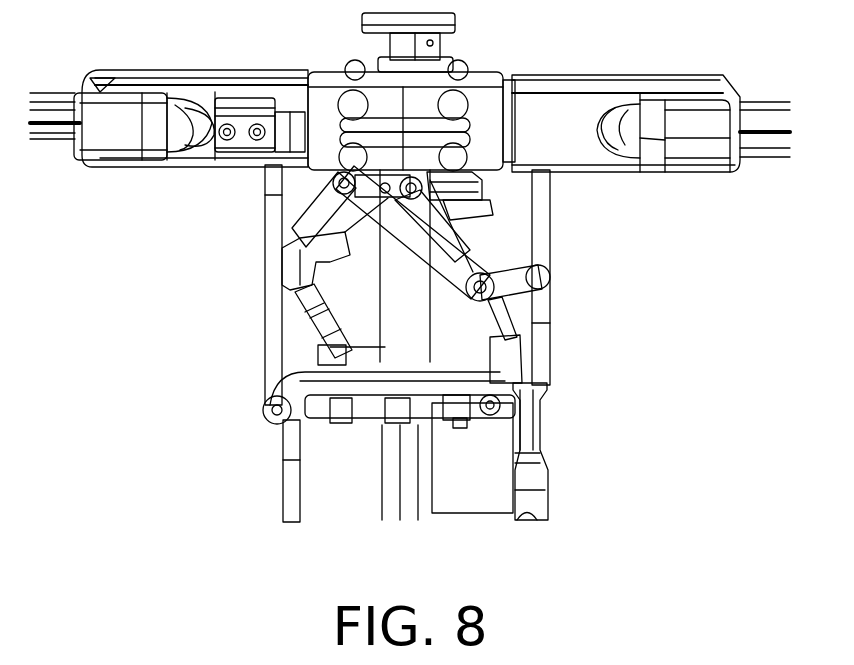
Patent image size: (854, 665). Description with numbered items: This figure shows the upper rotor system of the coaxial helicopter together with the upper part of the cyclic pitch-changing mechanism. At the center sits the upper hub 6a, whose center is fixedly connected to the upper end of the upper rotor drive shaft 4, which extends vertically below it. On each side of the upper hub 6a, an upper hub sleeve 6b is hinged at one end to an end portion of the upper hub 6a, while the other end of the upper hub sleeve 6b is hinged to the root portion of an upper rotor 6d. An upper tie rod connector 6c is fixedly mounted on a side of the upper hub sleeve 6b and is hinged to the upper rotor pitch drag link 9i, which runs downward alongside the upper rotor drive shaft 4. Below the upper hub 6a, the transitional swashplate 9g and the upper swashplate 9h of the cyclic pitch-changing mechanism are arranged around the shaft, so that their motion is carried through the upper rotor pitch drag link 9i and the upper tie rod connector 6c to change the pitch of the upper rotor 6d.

The upper hub 6a is at (340, 76).
The upper hub sleeve 6b is at (233, 84).
The upper tie rod connector 6c is at (245, 142).
The upper rotor 6d is at (55, 132).
The upper rotor pitch drag link 9i is at (268, 243).
The upper swashplate 9h is at (305, 360).
The transitional swashplate 9g is at (380, 405).
The upper rotor drive shaft 4 is at (400, 272).